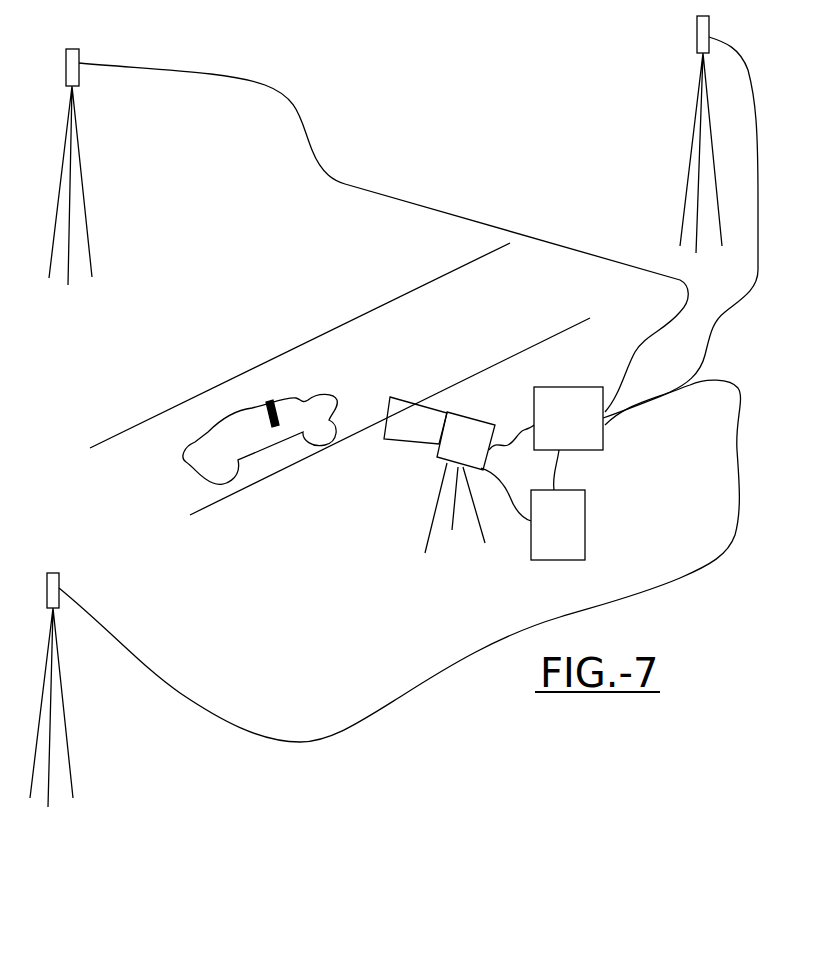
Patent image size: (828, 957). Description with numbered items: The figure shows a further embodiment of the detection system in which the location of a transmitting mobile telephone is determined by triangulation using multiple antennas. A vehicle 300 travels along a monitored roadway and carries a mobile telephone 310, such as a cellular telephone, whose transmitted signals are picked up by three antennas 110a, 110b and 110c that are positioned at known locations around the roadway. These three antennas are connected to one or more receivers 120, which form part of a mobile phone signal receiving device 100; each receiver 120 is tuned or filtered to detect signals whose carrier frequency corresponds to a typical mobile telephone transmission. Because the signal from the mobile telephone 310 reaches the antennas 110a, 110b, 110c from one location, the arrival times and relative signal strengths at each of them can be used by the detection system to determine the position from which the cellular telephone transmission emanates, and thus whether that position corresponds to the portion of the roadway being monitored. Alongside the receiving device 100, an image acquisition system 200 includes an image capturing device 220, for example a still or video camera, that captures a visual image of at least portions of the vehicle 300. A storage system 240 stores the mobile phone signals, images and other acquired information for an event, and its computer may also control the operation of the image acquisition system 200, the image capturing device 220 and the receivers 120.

The mobile phone signal receiving device 100 is at (624, 446).
The antenna 110a is at (59, 580).
The antenna 110b is at (79, 51).
The antenna 110c is at (697, 30).
The receiver 120 is at (593, 450).
The image acquisition system 200 is at (368, 506).
The image capturing device 220 is at (437, 462).
The storage system 240 is at (563, 560).
The vehicle 300 is at (210, 432).
The mobile telephone 310 is at (268, 405).